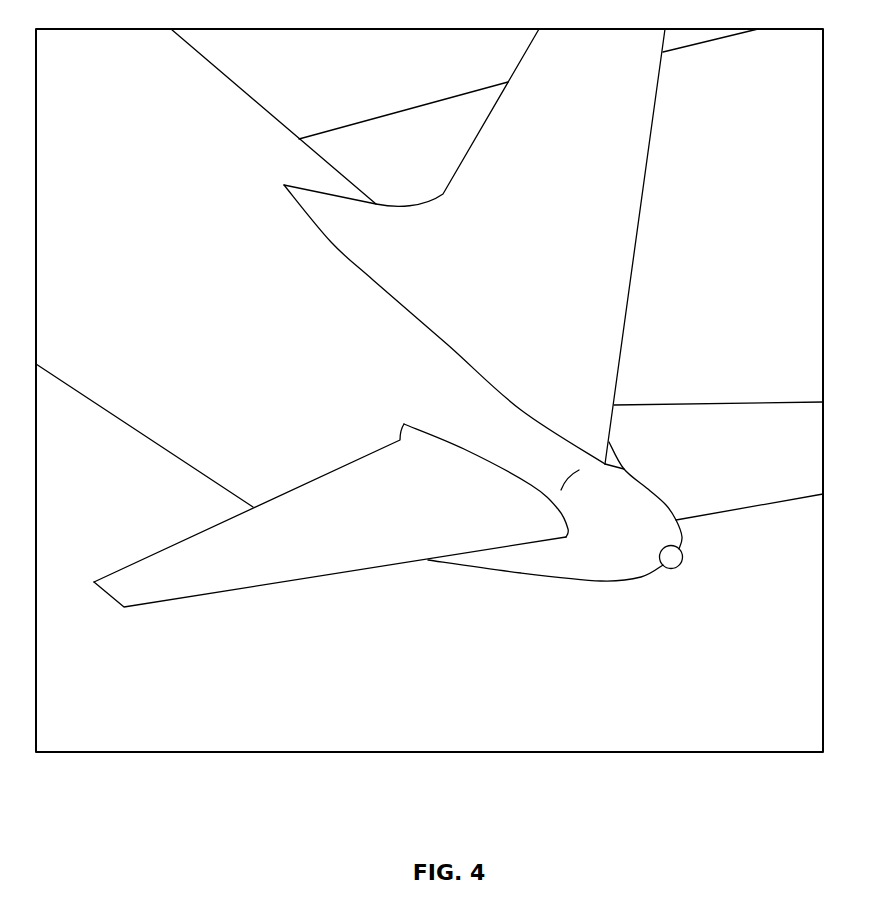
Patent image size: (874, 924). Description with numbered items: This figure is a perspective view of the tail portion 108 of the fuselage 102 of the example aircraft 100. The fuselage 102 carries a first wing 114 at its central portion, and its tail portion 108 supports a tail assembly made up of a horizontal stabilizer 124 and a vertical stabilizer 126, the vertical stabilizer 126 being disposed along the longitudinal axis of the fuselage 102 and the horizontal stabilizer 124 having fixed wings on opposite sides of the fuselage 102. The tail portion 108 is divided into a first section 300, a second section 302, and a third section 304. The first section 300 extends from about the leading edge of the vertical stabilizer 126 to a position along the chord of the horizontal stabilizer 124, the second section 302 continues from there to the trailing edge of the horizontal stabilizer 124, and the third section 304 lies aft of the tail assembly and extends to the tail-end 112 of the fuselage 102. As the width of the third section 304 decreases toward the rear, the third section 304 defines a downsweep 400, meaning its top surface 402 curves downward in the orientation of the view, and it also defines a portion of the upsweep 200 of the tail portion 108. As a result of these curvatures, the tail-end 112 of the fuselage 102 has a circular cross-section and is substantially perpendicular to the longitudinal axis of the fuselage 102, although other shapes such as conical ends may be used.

The aircraft 100 is at (429, 338).
The fuselage 102 is at (93, 244).
The tail portion 108 is at (150, 150).
The tail-end 112 is at (677, 565).
The first wing 114 is at (347, 102).
The horizontal stabilizer 124 is at (272, 558).
The vertical stabilizer 126 is at (647, 165).
The upsweep 200 is at (643, 572).
The first section 300 is at (203, 458).
The second section 302 is at (500, 552).
The third section 304 is at (593, 560).
The downsweep 400 is at (658, 493).
The top surface 402 is at (603, 522).